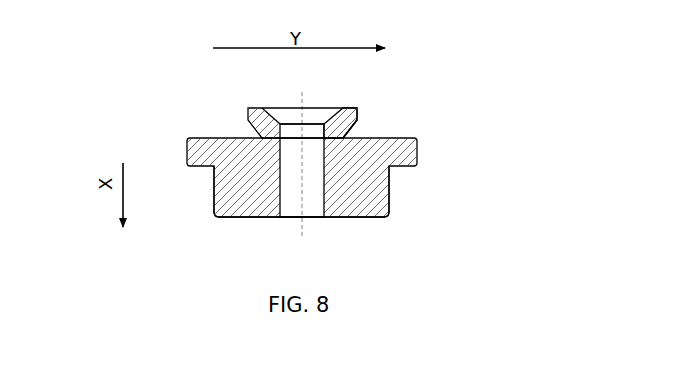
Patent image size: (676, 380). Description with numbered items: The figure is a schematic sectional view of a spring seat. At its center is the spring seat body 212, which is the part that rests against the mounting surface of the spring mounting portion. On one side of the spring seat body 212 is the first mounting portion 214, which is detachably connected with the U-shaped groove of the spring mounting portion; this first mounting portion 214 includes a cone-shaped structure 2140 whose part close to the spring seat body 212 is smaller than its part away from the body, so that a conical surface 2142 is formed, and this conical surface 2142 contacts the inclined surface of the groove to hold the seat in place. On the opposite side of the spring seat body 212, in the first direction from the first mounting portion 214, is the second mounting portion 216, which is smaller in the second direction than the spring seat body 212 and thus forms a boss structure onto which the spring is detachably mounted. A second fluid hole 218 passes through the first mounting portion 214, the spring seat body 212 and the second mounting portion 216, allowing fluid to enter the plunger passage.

The spring seat body 212 is at (297, 161).
The first mounting portion 214 is at (297, 143).
The cone-shaped structure 2140 is at (297, 143).
The conical surface 2142 is at (420, 168).
The second mounting portion 216 is at (265, 220).
The second fluid hole 218 is at (354, 199).